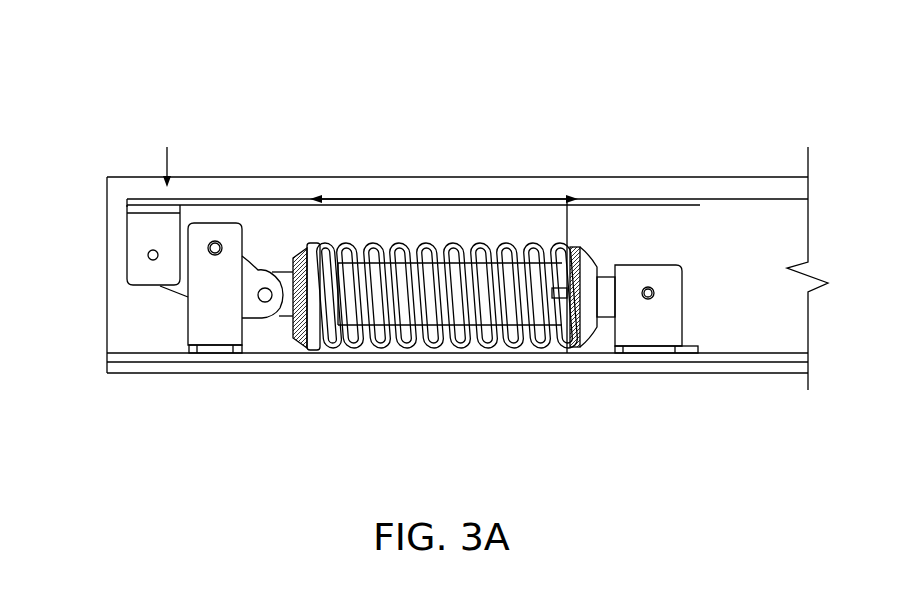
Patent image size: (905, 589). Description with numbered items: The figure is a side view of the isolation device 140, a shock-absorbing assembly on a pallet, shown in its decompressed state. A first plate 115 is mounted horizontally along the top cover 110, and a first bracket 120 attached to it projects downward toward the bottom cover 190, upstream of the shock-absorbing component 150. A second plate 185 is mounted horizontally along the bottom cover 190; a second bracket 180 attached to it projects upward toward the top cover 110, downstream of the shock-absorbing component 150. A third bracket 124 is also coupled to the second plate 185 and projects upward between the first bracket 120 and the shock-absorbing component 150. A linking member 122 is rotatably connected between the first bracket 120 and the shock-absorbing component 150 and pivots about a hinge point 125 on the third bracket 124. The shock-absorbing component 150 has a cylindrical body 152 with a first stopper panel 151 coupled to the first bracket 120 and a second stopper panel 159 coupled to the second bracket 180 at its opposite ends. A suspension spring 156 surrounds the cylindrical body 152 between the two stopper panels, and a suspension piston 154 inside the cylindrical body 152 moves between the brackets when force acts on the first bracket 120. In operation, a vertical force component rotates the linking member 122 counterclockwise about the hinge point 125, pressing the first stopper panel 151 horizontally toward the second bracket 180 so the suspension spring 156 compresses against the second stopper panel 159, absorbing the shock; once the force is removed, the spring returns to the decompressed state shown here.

The top cover 110 is at (674, 186).
The first plate 115 is at (239, 199).
The first bracket 120 is at (130, 243).
The linking member 122 is at (252, 272).
The third bracket 124 is at (197, 307).
The hinge point 125 is at (214, 258).
The isolation device 140 is at (175, 65).
The shock-absorbing component 150 is at (382, 247).
The first stopper panel 151 is at (313, 243).
The cylindrical body 152 is at (500, 245).
The suspension piston 154 is at (560, 303).
The suspension spring 156 is at (362, 347).
The second stopper panel 159 is at (587, 247).
The second bracket 180 is at (670, 303).
The second plate 185 is at (612, 360).
The bottom cover 190 is at (450, 367).